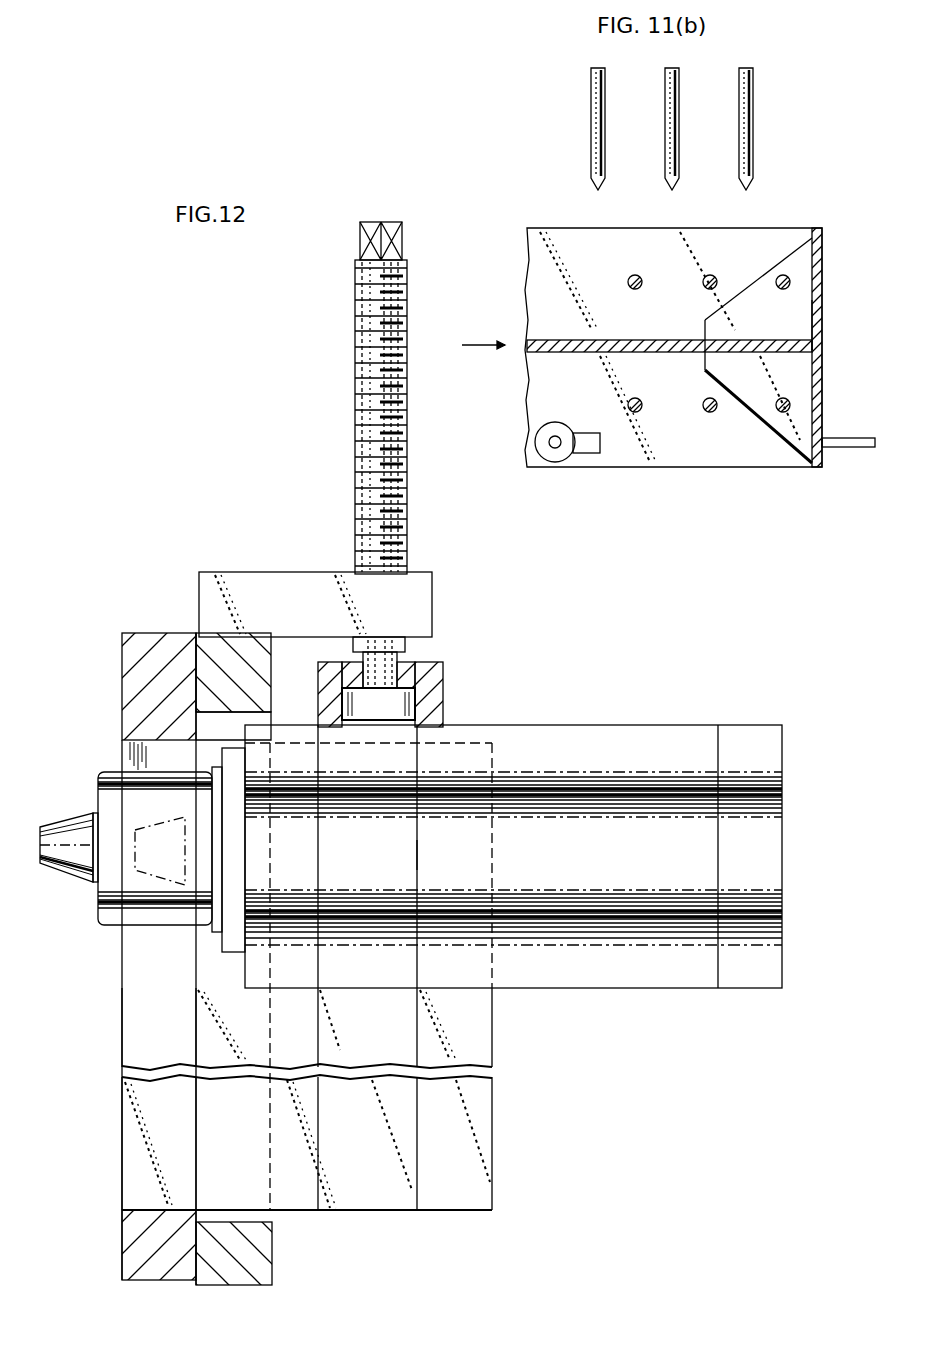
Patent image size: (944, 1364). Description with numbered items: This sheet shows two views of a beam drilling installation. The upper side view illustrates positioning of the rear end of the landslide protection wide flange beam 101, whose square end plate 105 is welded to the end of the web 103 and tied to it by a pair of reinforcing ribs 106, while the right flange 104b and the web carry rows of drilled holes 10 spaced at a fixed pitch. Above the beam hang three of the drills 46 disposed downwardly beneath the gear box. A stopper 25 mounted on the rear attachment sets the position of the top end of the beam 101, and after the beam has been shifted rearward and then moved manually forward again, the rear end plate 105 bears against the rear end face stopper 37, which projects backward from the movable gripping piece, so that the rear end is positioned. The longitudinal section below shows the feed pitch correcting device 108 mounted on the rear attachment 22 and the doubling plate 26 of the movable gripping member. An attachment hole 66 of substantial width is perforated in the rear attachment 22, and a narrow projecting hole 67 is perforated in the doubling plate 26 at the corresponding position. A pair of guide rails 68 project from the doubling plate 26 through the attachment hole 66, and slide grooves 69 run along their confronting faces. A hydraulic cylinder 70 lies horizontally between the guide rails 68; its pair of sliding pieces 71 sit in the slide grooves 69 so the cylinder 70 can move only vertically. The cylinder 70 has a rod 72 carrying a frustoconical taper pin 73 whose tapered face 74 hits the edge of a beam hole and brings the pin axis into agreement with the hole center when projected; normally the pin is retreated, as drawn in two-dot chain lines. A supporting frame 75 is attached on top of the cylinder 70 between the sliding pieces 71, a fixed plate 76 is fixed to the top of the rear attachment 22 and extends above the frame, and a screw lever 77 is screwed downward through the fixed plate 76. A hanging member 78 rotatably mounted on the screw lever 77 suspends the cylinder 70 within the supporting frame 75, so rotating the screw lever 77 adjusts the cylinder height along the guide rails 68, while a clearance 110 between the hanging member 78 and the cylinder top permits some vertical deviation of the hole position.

In FIG. 11B, the drills 46 is at (745, 122).
In FIG. 11B, the right flange 104b is at (569, 236).
In FIG. 11B, the landslide protection wide flange beam 101 is at (822, 250).
In FIG. 11B, the web 103 is at (572, 342).
In FIG. 11B, the end plate 105 is at (822, 323).
In FIG. 11B, the reinforcing ribs 106 is at (704, 321).
In FIG. 11B, the holes 10 is at (782, 278).
In FIG. 11B, the stopper 37 is at (838, 438).
In FIG. 11B, the stopper 25 is at (555, 462).
In FIG. 12, the screw lever 77 is at (356, 436).
In FIG. 12, the fixed plate 76 is at (297, 574).
In FIG. 12, the rear attachment 22 is at (207, 641).
In FIG. 12, the doubling plate 26 is at (124, 665).
In FIG. 12, the attachment hole 66 is at (214, 714).
In FIG. 12, the projecting hole 67 is at (140, 744).
In FIG. 12, the supporting frame 75 is at (438, 684).
In FIG. 12, the hanging member 78 is at (416, 704).
In FIG. 12, the clearance 110 is at (376, 728).
In FIG. 12, the hydraulic cylinder 70 is at (557, 727).
In FIG. 12, the feed pitch correcting device 108 is at (672, 716).
In FIG. 12, the sliding pieces 71 is at (414, 858).
In FIG. 12, the taper pin 73 is at (68, 825).
In FIG. 12, the tapered face 74 is at (62, 868).
In FIG. 12, the rod 72 is at (150, 918).
In FIG. 12, the guide rails 68 is at (482, 1022).
In FIG. 12, the slide grooves 69 is at (404, 1157).